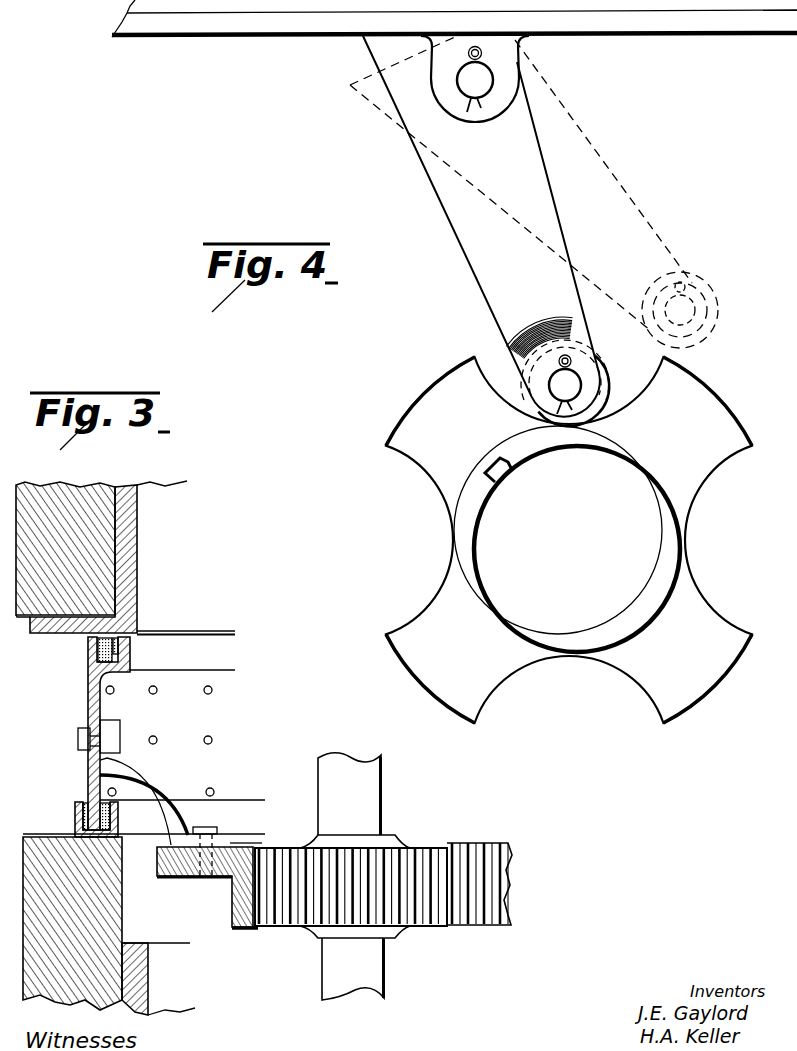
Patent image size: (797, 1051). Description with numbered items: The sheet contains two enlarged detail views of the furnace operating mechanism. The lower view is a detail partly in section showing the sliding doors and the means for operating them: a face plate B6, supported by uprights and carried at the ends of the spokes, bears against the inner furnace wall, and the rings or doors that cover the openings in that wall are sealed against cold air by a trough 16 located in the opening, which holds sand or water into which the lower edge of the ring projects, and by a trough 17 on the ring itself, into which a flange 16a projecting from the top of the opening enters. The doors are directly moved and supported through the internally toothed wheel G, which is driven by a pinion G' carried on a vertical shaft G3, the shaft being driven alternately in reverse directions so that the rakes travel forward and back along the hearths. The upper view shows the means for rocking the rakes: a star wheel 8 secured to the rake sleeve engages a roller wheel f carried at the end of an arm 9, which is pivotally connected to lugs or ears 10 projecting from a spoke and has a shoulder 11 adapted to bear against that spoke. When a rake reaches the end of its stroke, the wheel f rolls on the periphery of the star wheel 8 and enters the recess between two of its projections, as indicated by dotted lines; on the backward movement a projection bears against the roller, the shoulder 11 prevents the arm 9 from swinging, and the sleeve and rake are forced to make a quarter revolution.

In FIG. 4, the star wheel 8 is at (569, 540).
In FIG. 4, the arm 9 is at (534, 231).
In FIG. 4, the lugs or ears 10 is at (500, 88).
In FIG. 4, the shoulder 11 is at (374, 45).
In FIG. 4, the wheel f is at (590, 390).
In FIG. 3, the face plate B6 is at (125, 575).
In FIG. 3, the trough 16 is at (78, 812).
In FIG. 3, the flange 16a is at (88, 652).
In FIG. 3, the trough 17 is at (130, 652).
In FIG. 3, the internally toothed wheel G is at (351, 897).
In FIG. 3, the pinion G' is at (352, 885).
In FIG. 3, the vertical shaft G3 is at (351, 876).